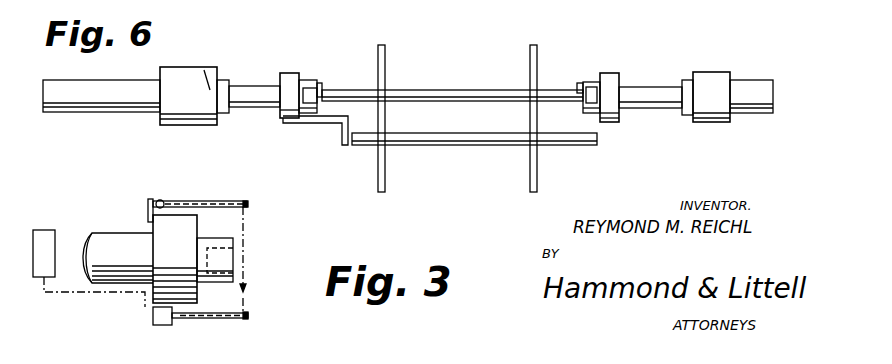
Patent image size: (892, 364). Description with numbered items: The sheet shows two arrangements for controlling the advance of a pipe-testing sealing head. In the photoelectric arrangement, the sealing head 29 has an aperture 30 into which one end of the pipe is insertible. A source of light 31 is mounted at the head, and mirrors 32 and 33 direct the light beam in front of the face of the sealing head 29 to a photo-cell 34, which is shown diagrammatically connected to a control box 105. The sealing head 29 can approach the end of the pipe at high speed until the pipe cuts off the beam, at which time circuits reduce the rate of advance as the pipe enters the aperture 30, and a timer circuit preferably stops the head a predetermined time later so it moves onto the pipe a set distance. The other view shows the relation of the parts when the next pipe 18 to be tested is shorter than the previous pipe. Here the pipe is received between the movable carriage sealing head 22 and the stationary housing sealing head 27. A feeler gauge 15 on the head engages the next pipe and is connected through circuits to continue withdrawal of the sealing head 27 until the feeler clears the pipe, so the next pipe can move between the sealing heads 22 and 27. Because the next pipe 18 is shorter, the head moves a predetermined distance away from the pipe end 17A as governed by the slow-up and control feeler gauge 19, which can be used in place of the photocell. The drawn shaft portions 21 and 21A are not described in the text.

In FIG. 6, the feeler gauge 15 is at (330, 123).
In FIG. 6, the pipe end 17A is at (452, 92).
In FIG. 6, the next pipe 18 is at (470, 140).
In FIG. 6, the slow-up and control feeler gauge 19 is at (322, 85).
In FIG. 6, the shaft 21 is at (775, 58).
In FIG. 6, the coupling 21A is at (580, 84).
In FIG. 6, the movable carriage sealing head 22 is at (590, 83).
In FIG. 6, the stationary housing sealing head 27 is at (308, 85).
In FIG. 3, the sealing head 29 is at (217, 238).
In FIG. 3, the aperture 30 is at (227, 255).
In FIG. 3, the source of light 31 is at (160, 200).
In FIG. 3, the mirror 32 is at (248, 201).
In FIG. 3, the mirror 33 is at (250, 317).
In FIG. 3, the photo-cell 34 is at (152, 313).
In FIG. 3, the control box 105 is at (44, 230).